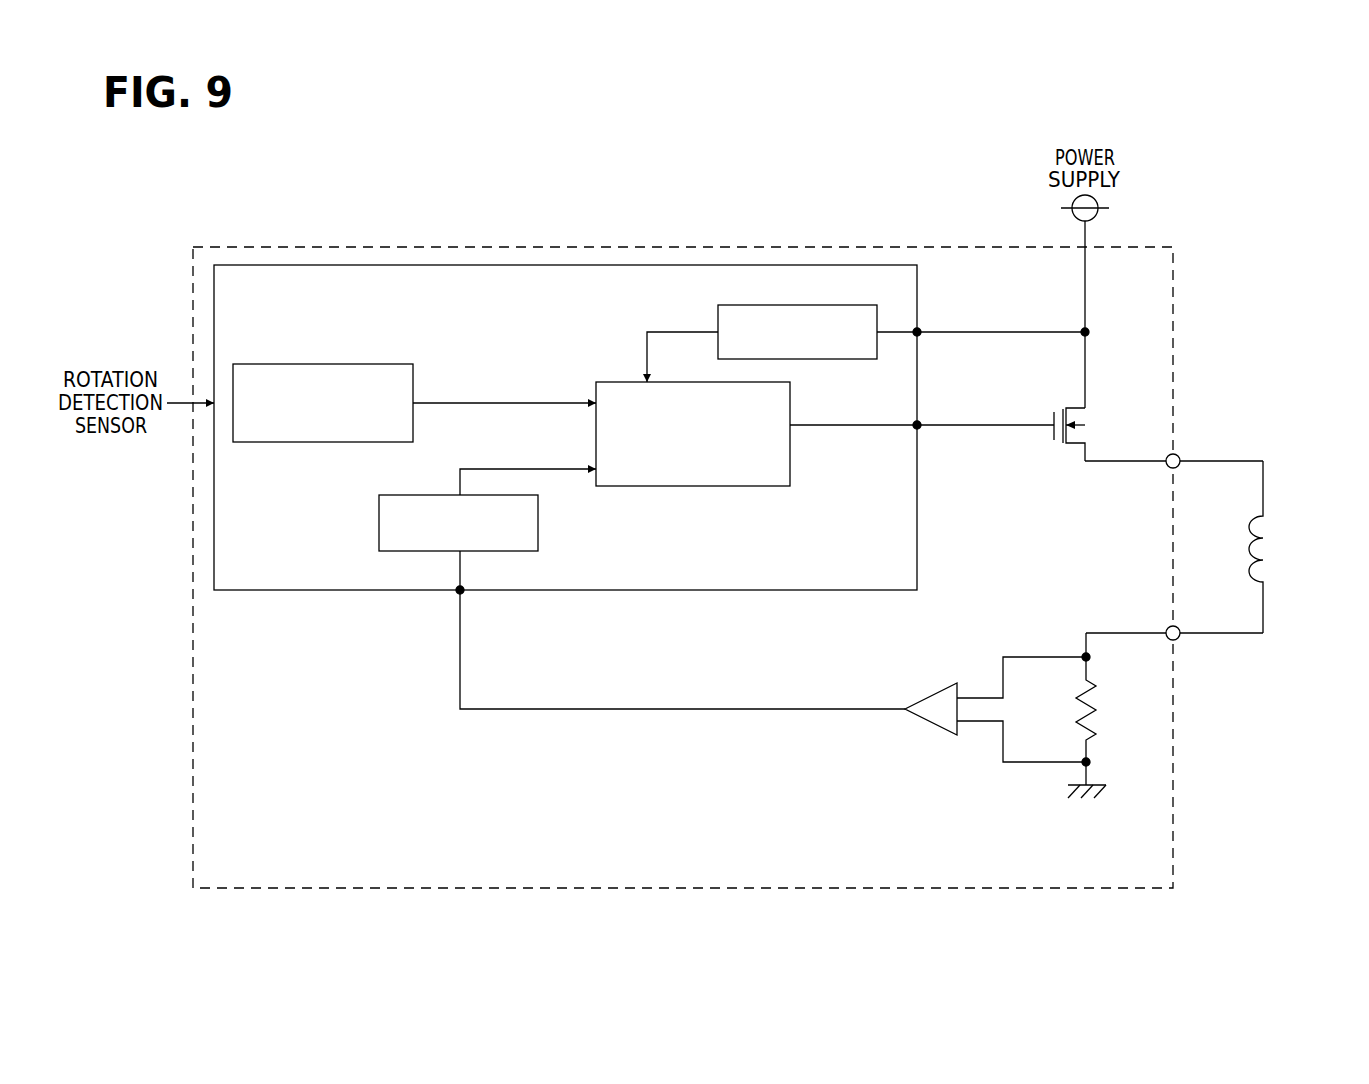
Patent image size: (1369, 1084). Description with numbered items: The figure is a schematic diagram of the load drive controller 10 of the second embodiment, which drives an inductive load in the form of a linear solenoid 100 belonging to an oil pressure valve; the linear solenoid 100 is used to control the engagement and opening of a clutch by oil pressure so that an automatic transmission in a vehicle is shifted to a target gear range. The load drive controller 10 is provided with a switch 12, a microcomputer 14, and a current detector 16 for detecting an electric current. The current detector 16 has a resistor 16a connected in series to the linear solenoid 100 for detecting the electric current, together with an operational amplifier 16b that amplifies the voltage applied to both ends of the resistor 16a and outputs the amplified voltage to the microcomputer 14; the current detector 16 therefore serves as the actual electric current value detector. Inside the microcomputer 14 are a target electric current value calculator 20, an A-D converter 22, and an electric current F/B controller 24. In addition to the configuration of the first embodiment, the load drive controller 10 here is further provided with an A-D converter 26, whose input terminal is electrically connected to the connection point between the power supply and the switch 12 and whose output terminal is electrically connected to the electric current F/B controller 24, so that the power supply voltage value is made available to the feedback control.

The load drive controller 10 is at (1174, 295).
The switch 12 is at (1087, 424).
The microcomputer 14 is at (853, 265).
The current detector 16 is at (1012, 630).
The resistor 16a is at (1095, 715).
The operational amplifier 16b is at (940, 695).
The target electric current value calculator 20 is at (365, 364).
The A-D converter 22 is at (379, 525).
The electric current F/B controller 24 is at (790, 458).
The A-D converter 26 is at (818, 305).
The linear solenoid 100 is at (1280, 540).